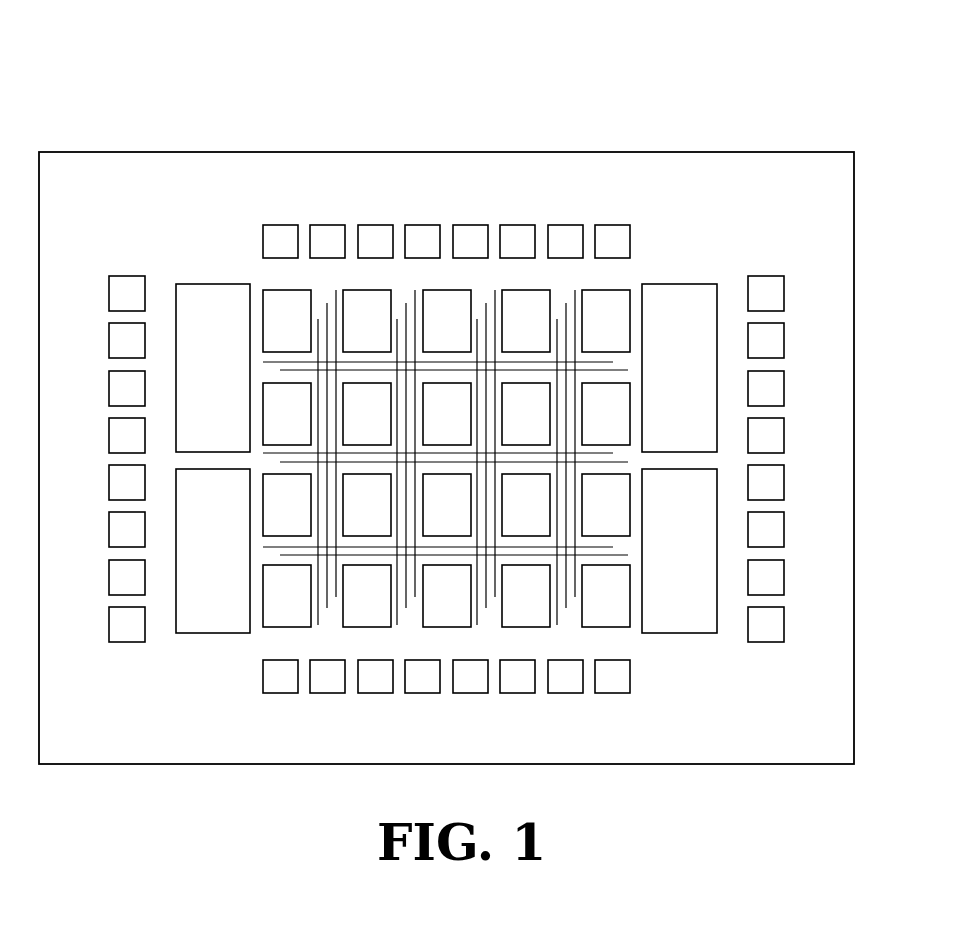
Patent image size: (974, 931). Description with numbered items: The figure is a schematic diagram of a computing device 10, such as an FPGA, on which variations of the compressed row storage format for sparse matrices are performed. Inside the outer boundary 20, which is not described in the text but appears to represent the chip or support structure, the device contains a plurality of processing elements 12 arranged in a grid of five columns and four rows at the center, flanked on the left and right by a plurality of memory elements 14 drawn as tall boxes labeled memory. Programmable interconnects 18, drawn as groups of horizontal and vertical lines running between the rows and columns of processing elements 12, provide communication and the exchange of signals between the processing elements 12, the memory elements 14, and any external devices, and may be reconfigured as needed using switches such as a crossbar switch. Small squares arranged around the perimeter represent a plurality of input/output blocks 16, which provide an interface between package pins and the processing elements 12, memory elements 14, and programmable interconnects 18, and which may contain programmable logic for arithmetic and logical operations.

The computing device 10 is at (172, 104).
The processing elements 12 is at (509, 320).
The memory elements 14 is at (681, 293).
The input/output (I/O) blocks 16 is at (468, 228).
The programmable interconnects 18 is at (328, 412).
The chip boundary / substrate 20 is at (855, 245).